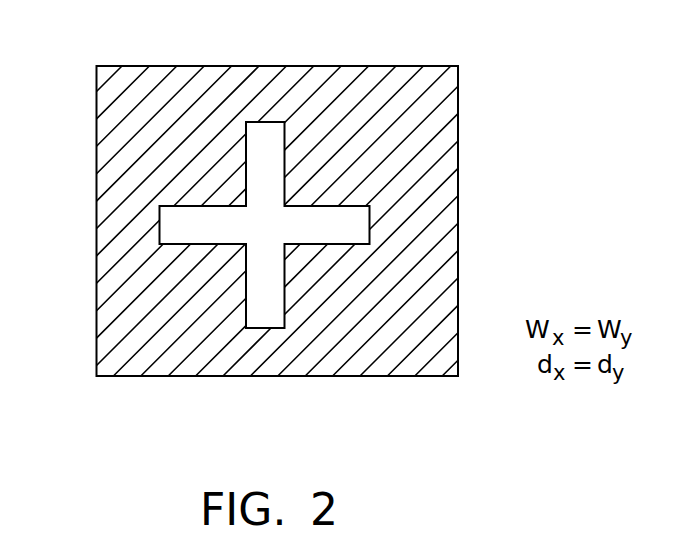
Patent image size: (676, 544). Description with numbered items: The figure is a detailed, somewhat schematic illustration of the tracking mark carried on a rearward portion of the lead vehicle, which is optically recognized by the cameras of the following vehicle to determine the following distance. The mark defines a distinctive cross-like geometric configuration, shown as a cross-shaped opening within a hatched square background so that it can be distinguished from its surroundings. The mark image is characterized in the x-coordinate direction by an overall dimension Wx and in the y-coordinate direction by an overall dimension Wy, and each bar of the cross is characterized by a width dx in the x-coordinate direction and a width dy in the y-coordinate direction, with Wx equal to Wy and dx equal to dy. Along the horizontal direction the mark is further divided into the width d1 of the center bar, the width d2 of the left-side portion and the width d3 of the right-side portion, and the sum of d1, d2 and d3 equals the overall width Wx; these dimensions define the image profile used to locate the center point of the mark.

The bar width in the x-coordinate direction dx is at (322, 29).
The bar width in the y-coordinate direction dy is at (370, 207).
The width of the center bar d1 is at (320, 344).
The width of the left-side portion d2 is at (246, 282).
The width of the right-side portion d3 is at (370, 282).
The overall width in the x-coordinate direction Wx is at (160, 244).
The overall height in the y-coordinate direction Wy is at (33, 122).